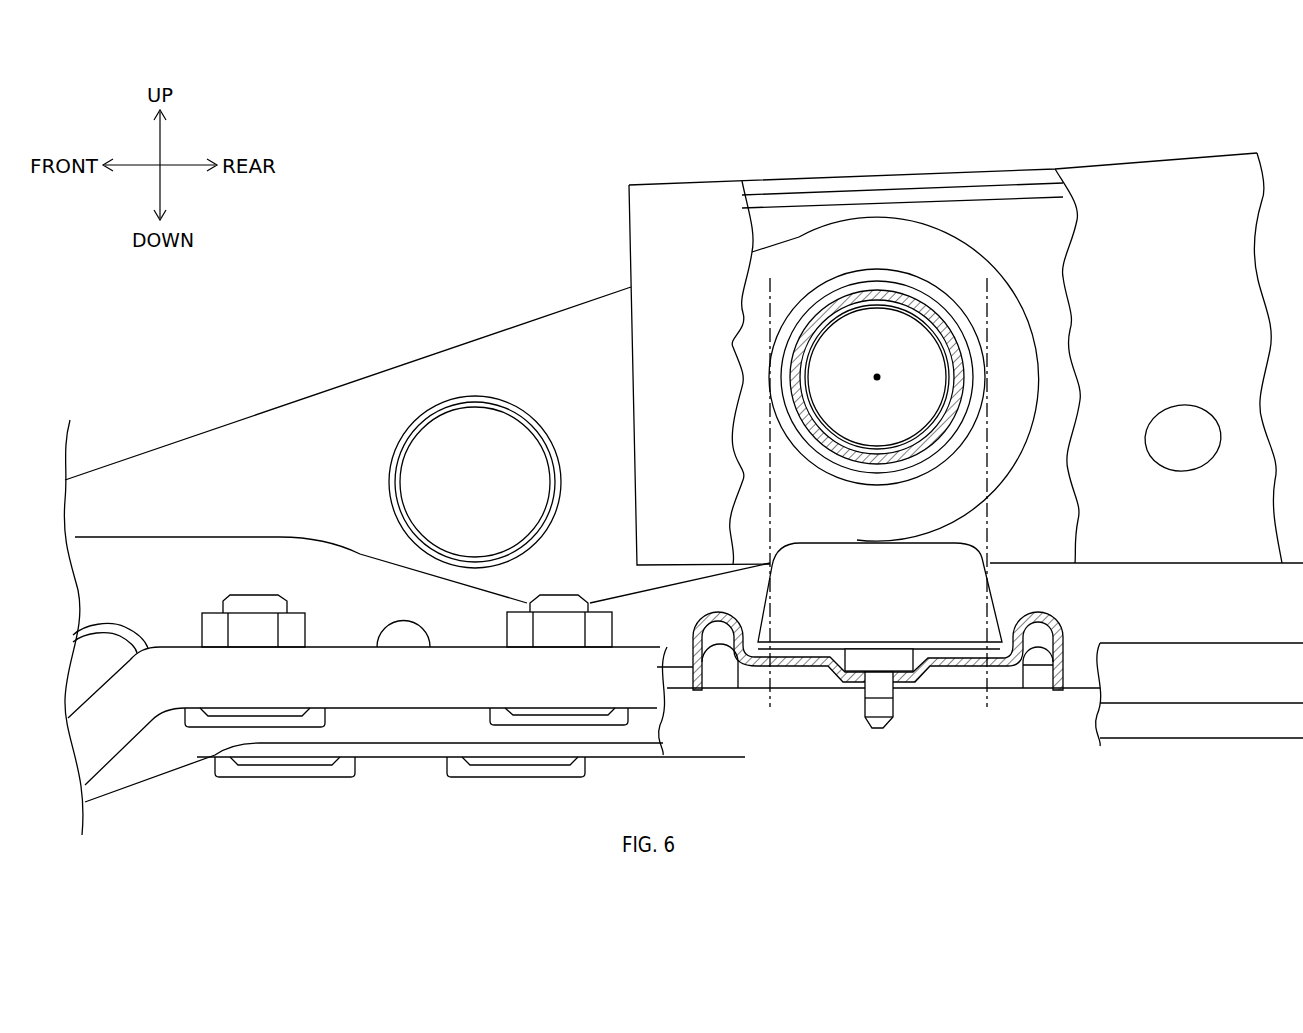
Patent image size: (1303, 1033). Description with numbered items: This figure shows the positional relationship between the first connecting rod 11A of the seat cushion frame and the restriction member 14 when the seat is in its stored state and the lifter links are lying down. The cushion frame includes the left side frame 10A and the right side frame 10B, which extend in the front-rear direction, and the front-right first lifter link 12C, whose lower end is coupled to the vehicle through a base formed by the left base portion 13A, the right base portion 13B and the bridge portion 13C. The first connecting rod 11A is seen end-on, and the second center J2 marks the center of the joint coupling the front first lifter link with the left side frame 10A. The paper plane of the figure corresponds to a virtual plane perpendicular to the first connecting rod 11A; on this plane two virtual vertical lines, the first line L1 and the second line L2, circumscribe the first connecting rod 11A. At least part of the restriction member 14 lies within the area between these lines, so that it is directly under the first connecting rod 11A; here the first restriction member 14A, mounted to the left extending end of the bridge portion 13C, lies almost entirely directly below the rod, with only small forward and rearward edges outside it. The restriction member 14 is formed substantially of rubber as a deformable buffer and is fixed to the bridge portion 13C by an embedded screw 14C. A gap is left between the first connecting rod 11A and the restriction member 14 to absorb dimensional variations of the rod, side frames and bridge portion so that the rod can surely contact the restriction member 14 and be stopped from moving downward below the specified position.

The left side frame 10A is at (688, 185).
The right side frame 10B is at (838, 186).
The first connecting rod 11A is at (893, 290).
The front-right first lifter link 12C is at (465, 335).
The left base portion 13A is at (428, 710).
The right base portion 13B is at (372, 758).
The bridge portion 13C is at (806, 668).
The restriction member 14 is at (996, 615).
The first restriction member 14A is at (975, 620).
The screw 14C is at (862, 710).
The second center J2 is at (879, 376).
The first line L1 is at (988, 298).
The second line L2 is at (772, 290).